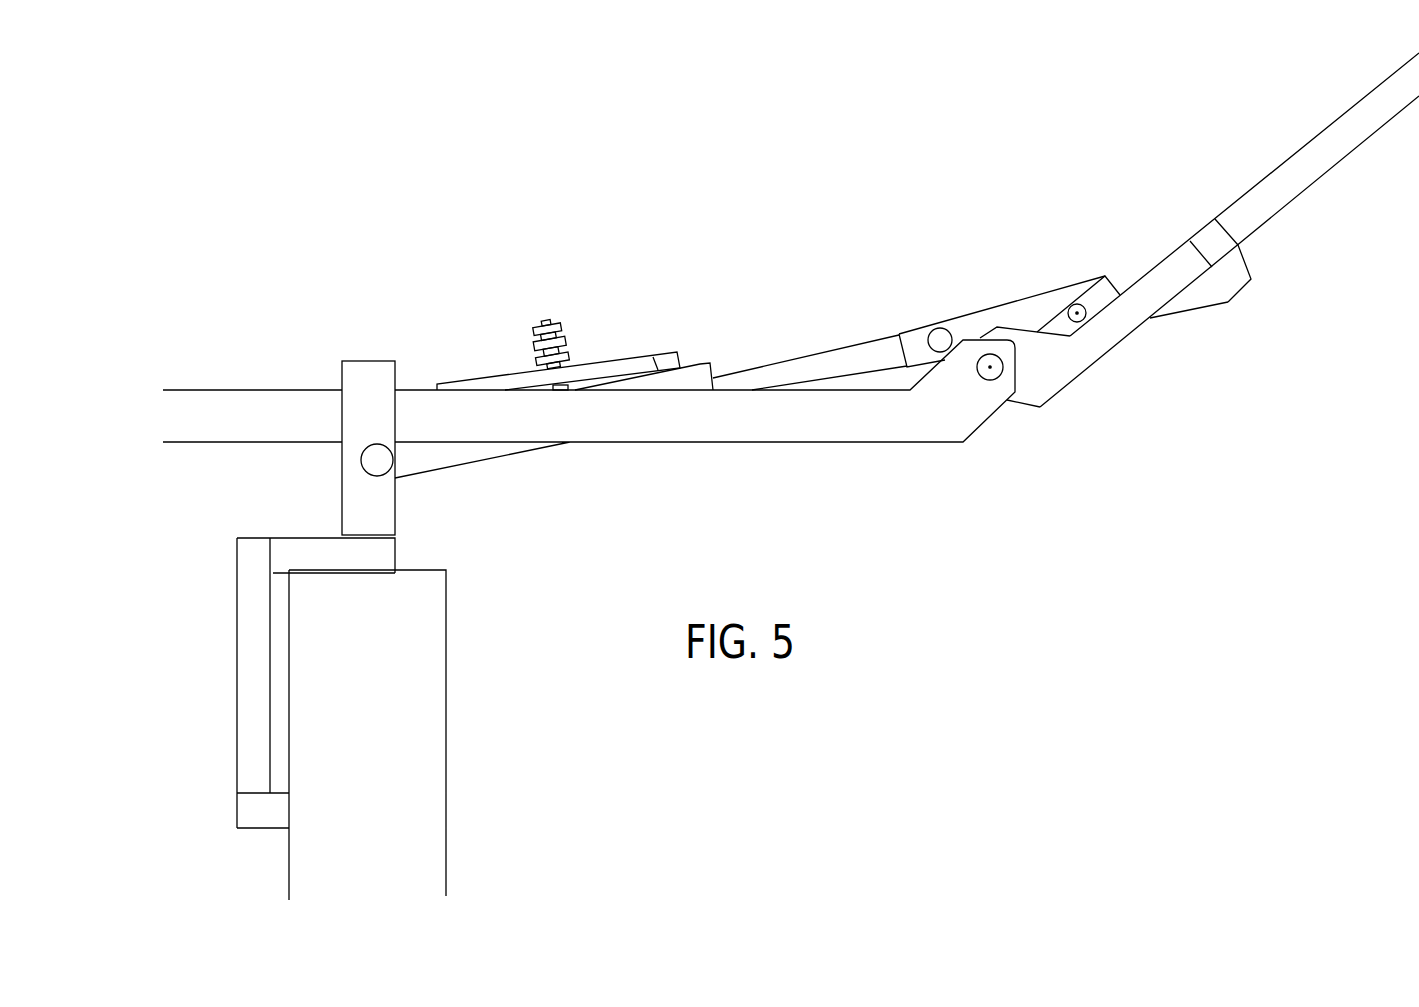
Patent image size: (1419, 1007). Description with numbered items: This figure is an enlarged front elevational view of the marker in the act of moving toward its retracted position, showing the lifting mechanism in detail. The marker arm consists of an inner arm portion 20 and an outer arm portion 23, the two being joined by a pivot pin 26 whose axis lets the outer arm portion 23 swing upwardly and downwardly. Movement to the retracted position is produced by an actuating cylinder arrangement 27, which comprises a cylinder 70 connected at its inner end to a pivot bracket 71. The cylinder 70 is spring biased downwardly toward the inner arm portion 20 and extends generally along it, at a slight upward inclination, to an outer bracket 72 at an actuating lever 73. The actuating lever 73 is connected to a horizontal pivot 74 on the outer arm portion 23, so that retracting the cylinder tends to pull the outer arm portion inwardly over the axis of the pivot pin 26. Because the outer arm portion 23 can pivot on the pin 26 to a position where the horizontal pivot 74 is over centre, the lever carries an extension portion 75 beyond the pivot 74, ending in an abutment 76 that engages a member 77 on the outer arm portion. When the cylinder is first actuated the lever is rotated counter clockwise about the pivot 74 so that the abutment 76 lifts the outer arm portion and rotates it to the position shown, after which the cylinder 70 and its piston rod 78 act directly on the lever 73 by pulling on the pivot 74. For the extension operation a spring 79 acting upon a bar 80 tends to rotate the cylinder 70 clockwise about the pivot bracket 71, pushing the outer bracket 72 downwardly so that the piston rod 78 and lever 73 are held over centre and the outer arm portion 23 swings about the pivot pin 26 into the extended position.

The inner arm portion 20 is at (767, 433).
The outer arm portion 23 is at (1298, 153).
The pivot pin 26 is at (990, 370).
The actuating cylinder arrangement 27 is at (805, 262).
The cylinder 70 is at (693, 374).
The pivot bracket 71 is at (383, 466).
The outer bracket 72 is at (940, 340).
The actuating lever 73 is at (1025, 305).
The horizontal pivot 74 is at (1077, 313).
The extension portion 75 is at (1178, 308).
The abutment 76 is at (1250, 278).
The member 77 is at (1210, 228).
The piston rod 78 is at (838, 353).
The spring 79 is at (568, 340).
The bar 80 is at (631, 360).